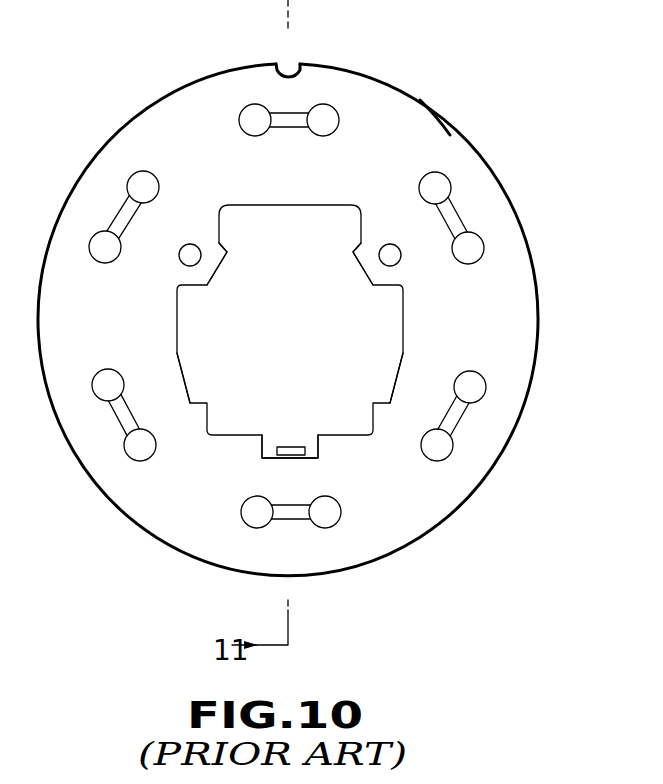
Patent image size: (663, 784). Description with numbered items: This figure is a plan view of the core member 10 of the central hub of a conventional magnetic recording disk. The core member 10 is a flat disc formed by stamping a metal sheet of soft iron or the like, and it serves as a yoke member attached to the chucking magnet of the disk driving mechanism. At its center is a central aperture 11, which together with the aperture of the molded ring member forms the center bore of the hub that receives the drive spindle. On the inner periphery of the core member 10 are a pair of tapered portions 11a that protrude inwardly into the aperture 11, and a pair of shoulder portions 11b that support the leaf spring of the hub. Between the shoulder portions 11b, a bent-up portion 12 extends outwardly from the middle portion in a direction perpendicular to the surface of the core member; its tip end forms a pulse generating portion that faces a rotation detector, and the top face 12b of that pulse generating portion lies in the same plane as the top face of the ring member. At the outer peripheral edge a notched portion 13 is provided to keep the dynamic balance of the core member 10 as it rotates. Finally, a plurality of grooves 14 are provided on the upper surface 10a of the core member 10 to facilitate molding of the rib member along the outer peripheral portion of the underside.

The core member 10 is at (389, 566).
The upper surface of the core member 10a is at (425, 125).
The central aperture 11 is at (177, 322).
The tapered portions 11a is at (218, 268).
The shoulder portions 11b is at (195, 402).
The bent-up portion 12 is at (288, 445).
The top face of the pulse generating portion 12b is at (285, 455).
The notched portion 13 is at (293, 75).
The grooves 14 is at (302, 113).